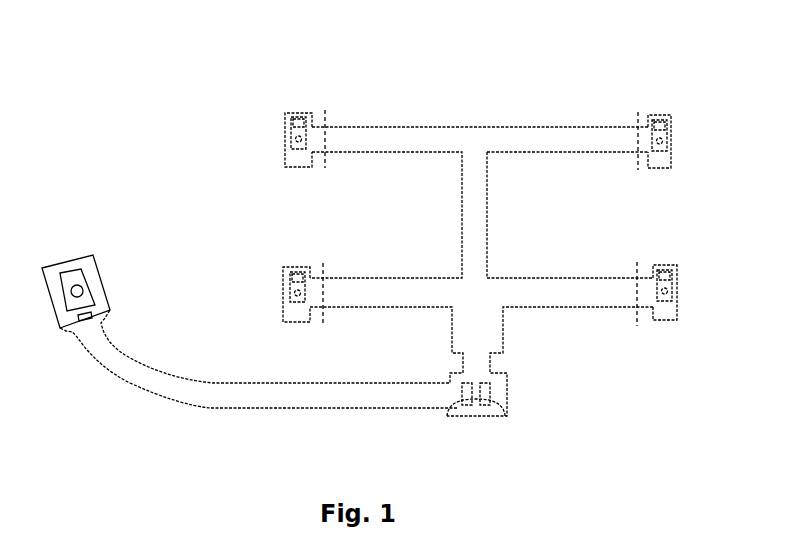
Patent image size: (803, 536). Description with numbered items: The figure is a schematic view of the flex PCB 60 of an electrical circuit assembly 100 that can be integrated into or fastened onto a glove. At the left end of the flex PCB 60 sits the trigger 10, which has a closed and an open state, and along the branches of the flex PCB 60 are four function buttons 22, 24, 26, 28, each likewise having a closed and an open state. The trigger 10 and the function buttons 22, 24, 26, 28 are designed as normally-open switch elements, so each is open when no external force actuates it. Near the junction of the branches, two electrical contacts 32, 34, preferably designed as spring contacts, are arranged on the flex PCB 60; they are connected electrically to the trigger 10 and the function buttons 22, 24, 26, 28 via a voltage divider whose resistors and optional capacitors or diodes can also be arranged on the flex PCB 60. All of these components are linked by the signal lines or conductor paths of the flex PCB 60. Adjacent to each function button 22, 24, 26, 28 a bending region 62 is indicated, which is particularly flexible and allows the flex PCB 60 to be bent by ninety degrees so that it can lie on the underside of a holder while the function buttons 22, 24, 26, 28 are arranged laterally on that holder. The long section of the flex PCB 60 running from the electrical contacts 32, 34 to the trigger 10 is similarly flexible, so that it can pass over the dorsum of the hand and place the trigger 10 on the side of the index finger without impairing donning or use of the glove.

The electrical circuit assembly 100 is at (101, 91).
The trigger 10 is at (80, 279).
The function button 22 is at (291, 138).
The function button 24 is at (292, 289).
The function button 26 is at (660, 140).
The function button 28 is at (666, 294).
The electrical contact 32 is at (447, 416).
The electrical contact 34 is at (507, 416).
The flex PCB 60 is at (478, 138).
The bending region 62 is at (326, 110).